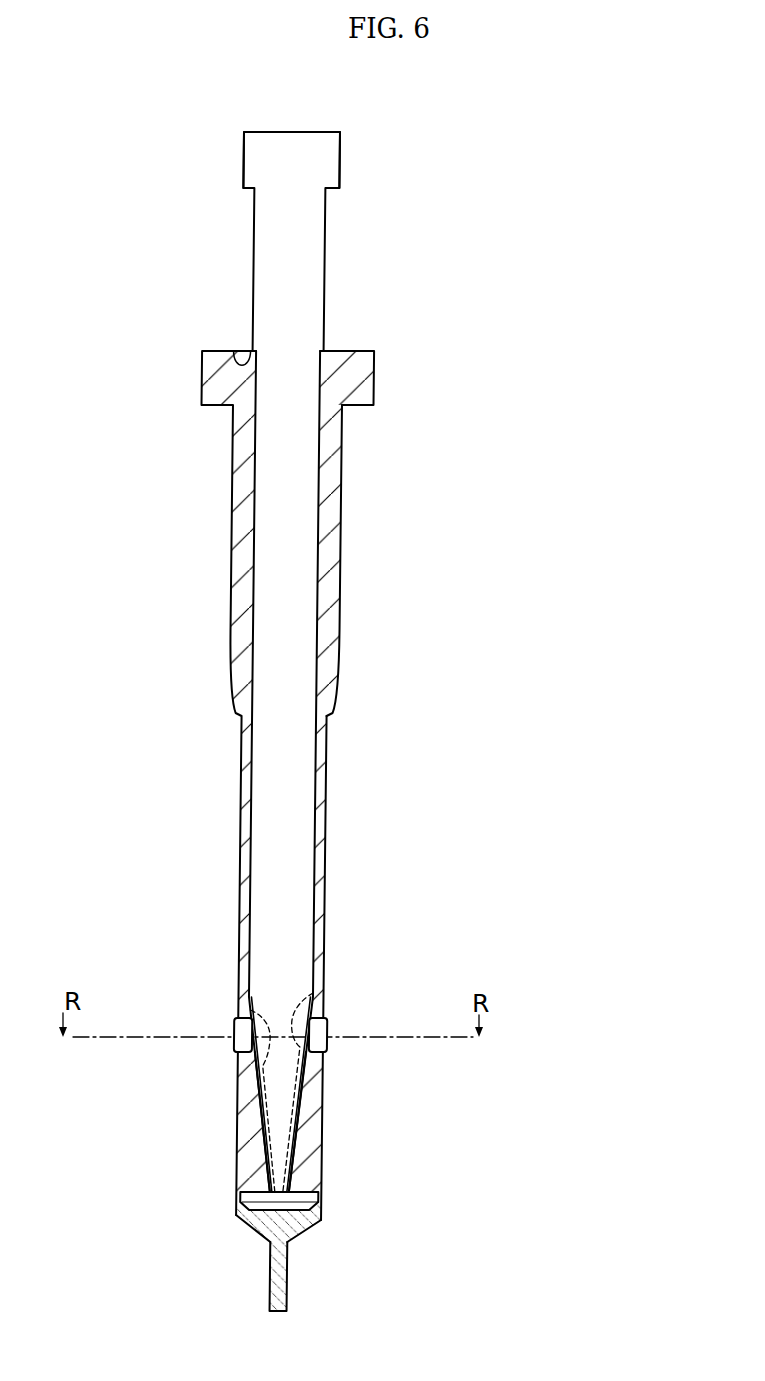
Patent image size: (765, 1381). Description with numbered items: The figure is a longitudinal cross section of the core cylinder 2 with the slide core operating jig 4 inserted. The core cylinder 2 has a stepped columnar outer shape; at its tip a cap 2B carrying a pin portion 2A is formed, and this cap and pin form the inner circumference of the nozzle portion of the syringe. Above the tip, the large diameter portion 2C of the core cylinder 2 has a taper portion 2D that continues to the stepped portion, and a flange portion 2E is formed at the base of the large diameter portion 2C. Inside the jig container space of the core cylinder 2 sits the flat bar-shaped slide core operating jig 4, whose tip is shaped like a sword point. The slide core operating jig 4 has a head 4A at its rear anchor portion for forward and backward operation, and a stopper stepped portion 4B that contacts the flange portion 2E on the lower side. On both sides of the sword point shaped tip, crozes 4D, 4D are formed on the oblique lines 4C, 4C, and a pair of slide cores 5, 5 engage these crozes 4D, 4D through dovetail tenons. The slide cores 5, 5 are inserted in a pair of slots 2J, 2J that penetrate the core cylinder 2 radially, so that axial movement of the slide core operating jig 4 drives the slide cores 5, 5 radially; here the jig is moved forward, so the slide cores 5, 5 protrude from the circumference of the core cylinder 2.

The core cylinder 2 is at (294, 821).
The pin portion 2A is at (287, 1268).
The cap 2B is at (237, 1217).
The large diameter portion 2C is at (343, 508).
The taper portion 2D is at (340, 688).
The flange portion 2E is at (373, 377).
The slot 2J is at (233, 1047).
The slide core operating jig 4 is at (289, 656).
The head 4A is at (245, 162).
The stopper stepped portion 4B is at (236, 356).
The oblique line 4C is at (238, 1118).
The croze 4D is at (250, 1010).
The slide core 5 is at (234, 1030).